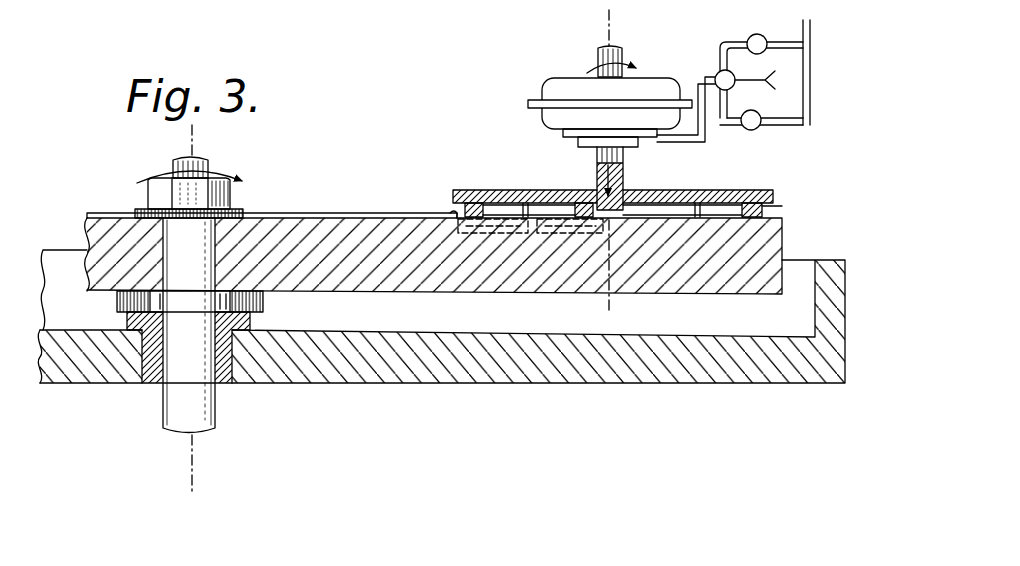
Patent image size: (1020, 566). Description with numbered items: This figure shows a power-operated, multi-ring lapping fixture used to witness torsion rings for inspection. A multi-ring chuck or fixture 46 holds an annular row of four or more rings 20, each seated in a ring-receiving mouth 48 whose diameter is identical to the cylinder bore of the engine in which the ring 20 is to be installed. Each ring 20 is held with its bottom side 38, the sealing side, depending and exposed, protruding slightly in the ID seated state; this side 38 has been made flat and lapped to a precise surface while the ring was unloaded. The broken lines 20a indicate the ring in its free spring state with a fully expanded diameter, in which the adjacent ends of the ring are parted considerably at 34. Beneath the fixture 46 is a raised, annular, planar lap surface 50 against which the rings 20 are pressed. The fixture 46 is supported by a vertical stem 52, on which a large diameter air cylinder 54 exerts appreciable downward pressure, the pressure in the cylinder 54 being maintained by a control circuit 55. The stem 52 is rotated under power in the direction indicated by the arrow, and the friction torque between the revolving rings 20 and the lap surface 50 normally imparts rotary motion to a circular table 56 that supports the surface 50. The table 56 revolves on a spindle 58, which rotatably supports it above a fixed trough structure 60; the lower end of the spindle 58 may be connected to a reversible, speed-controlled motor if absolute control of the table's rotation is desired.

The ring 20 is at (765, 213).
The broken lines showing free spring state of ring 20a is at (457, 234).
The parting of ring ends 34 is at (533, 234).
The bottom side of ring 38 is at (465, 234).
The multi-ring chuck or fixture 46 is at (679, 192).
The ring-receiving mouth 48 is at (497, 196).
The lap surface 50 is at (457, 213).
The vertical stem 52 is at (597, 155).
The air cylinder 54 is at (656, 88).
The control circuit 55 is at (761, 130).
The table 56 is at (297, 213).
The spindle 58 is at (173, 238).
The fixed trough structure 60 is at (357, 383).